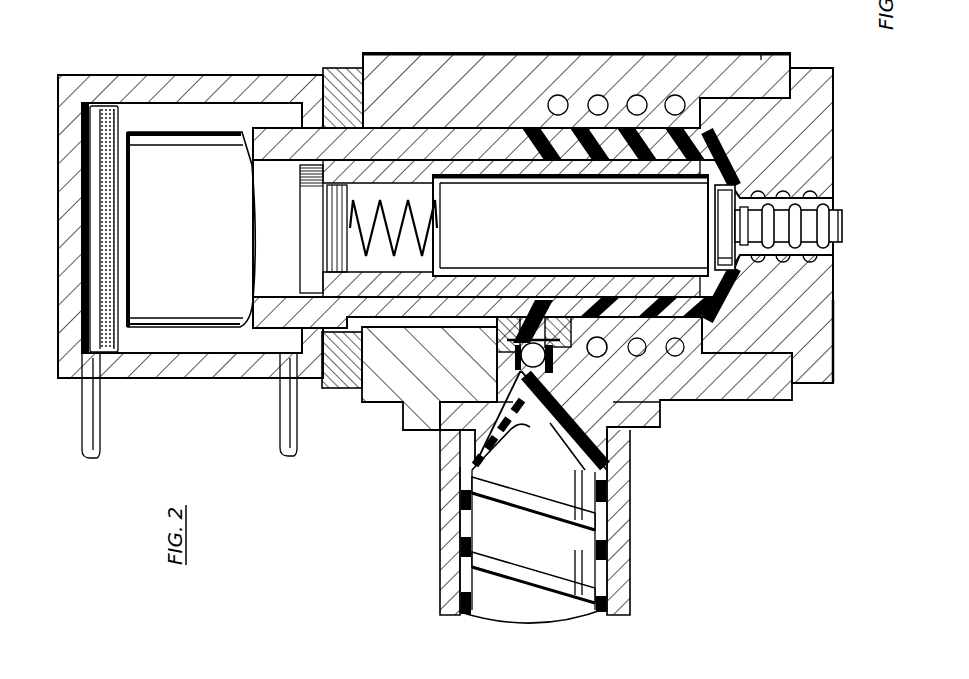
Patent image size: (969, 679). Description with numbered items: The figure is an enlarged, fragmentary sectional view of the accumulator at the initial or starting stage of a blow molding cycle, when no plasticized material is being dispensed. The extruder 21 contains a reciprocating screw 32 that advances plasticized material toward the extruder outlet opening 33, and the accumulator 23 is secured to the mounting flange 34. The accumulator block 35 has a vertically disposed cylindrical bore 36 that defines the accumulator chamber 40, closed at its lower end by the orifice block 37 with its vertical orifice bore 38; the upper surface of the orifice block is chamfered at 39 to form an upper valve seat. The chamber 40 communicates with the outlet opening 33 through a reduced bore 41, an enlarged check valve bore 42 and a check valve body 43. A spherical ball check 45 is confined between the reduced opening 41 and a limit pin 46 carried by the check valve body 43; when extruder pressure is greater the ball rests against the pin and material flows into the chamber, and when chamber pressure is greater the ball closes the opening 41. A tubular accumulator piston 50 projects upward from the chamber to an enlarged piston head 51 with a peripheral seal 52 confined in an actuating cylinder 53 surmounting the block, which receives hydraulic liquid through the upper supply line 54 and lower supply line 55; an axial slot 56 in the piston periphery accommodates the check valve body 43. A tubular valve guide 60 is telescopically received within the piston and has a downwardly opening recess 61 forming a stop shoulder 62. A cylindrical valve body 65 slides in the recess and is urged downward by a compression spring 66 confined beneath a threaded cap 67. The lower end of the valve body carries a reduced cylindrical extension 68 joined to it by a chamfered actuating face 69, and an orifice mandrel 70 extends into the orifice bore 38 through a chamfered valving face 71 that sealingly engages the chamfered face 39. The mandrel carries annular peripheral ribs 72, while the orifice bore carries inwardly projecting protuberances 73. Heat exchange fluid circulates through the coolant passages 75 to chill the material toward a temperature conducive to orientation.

The extruder 21 is at (430, 592).
The accumulator 23 is at (270, 62).
The reciprocating screw 32 is at (505, 618).
The extruder outlet opening 33 is at (507, 390).
The mounting flange 34 is at (406, 418).
The accumulator block 35 is at (446, 62).
The cylindrical bore 36 is at (470, 128).
The orifice block 37 is at (820, 388).
The orifice bore 38 is at (770, 198).
The chamfer 39 is at (733, 294).
The accumulator chamber 40 is at (568, 140).
The reduced bore 41 is at (578, 390).
The check valve bore 42 is at (513, 358).
The check valve body 43 is at (598, 358).
The ball check 45 is at (554, 340).
The limit pin 46 is at (497, 336).
The accumulator piston 50 is at (500, 135).
The piston head 51 is at (122, 112).
The peripheral seal 52 is at (110, 108).
The actuating cylinder 53 is at (186, 84).
The upper supply line 54 is at (87, 455).
The lower supply line 55 is at (282, 452).
The axially extending slot 56 is at (352, 360).
The valve guide 60 is at (396, 170).
The cylindrical recess 61 is at (668, 345).
The stop shoulder 62 is at (441, 185).
The valve body 65 is at (612, 205).
The compression spring 66 is at (437, 241).
The threaded cap 67 is at (303, 233).
The reduced cylindrical extension 68 is at (722, 230).
The chamfered actuating face 69 is at (710, 200).
The orifice mandrel 70 is at (841, 224).
The chamfered valving face 71 is at (734, 256).
The annular peripheral ribs 72 is at (796, 205).
The annular peripheral protuberances 73 is at (754, 30).
The coolant passages 75 is at (598, 95).